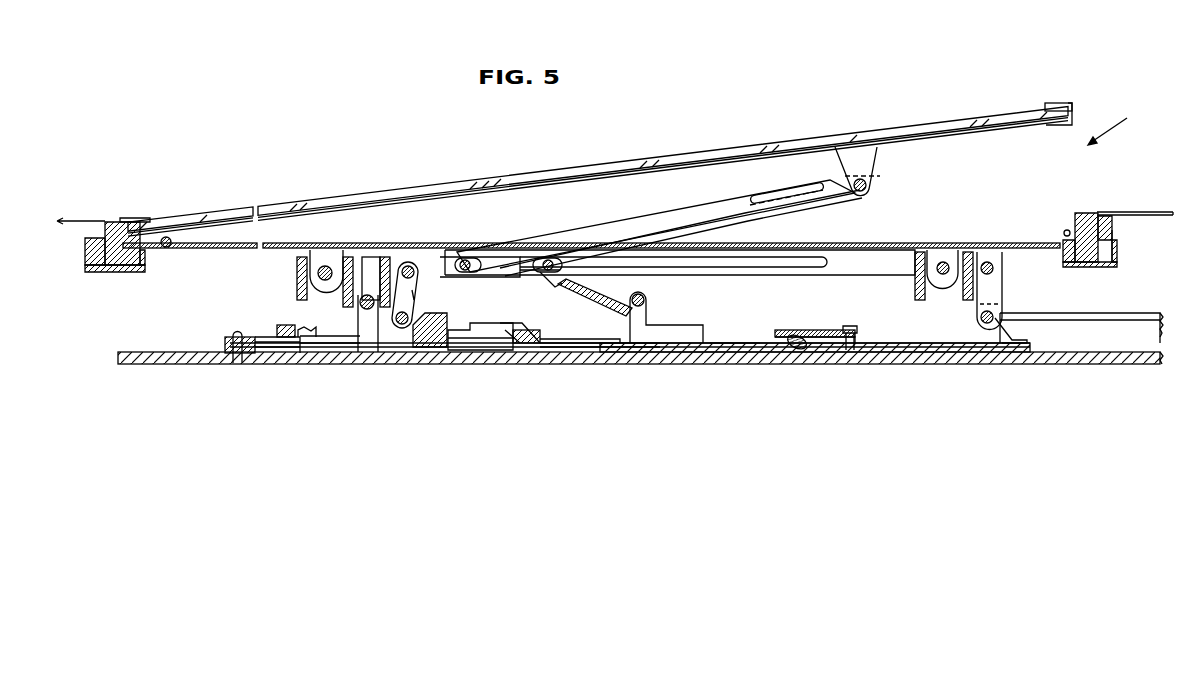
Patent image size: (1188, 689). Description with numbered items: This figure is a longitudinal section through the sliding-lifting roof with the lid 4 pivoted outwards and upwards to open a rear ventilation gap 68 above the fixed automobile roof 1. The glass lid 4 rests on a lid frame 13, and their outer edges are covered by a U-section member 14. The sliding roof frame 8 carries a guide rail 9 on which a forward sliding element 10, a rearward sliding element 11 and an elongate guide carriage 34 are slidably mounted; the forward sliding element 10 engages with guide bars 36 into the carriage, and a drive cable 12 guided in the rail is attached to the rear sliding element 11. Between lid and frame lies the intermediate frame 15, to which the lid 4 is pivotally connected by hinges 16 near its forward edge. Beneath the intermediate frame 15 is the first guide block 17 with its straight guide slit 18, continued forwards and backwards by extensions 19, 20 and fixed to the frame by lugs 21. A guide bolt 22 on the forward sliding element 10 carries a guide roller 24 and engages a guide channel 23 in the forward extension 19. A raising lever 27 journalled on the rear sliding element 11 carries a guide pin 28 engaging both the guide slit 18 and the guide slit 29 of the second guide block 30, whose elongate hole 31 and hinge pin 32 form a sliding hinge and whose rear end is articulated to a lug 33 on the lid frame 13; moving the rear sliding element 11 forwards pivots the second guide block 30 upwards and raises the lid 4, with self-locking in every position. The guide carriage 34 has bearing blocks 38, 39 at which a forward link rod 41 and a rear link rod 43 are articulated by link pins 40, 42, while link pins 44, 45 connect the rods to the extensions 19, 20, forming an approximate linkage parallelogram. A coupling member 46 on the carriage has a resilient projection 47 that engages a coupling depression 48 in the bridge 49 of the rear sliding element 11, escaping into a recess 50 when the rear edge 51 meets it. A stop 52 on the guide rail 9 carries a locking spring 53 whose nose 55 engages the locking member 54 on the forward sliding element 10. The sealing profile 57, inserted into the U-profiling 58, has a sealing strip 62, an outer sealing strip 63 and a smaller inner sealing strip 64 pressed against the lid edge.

The automobile roof 1 is at (1155, 211).
The lid 4 is at (698, 154).
The sliding roof frame 8 is at (1088, 365).
The guide rail 9 is at (170, 350).
The forward sliding element 10 is at (345, 333).
The rearward sliding element 11 is at (678, 328).
The drive cable 12 is at (530, 330).
The lid frame 13 is at (920, 128).
The U-section member 14 is at (1058, 104).
The intermediate frame 15 is at (1030, 243).
The hinge 16 is at (170, 248).
The first guide block 17 is at (860, 256).
The guide slit 18 is at (767, 270).
The forward extension 19 is at (297, 278).
The rear extension 20 is at (1003, 265).
The lug 21 is at (328, 258).
The guide bolt 22 is at (366, 348).
The guide channel 23 is at (384, 262).
The guide roller 24 is at (371, 262).
The raising lever 27 is at (586, 288).
The guide pin 28 is at (546, 258).
The guide slit 29 is at (704, 228).
The second guide block 30 is at (626, 232).
The elongate hole 31 is at (482, 270).
The hinge pin 32 is at (466, 272).
The lug 33 is at (876, 165).
The guide carriage 34 is at (742, 350).
The guide bar 36 is at (486, 352).
The forward bearing block 38 is at (432, 348).
The rear bearing block 39 is at (1002, 338).
The link pin 40 is at (400, 326).
The forward link rod 41 is at (414, 297).
The link pin 42 is at (985, 325).
The rear link rod 43 is at (990, 290).
The link pin 44 is at (411, 264).
The link pin 45 is at (985, 262).
The coupling member 46 is at (808, 330).
The projection 47 is at (846, 352).
The coupling depression 48 is at (604, 353).
The bridge 49 is at (568, 353).
The recess 50 is at (790, 350).
The rear edge 51 is at (644, 353).
The stop 52 is at (280, 325).
The locking spring 53 is at (262, 365).
The locking member 54 is at (306, 327).
The nose 55 is at (306, 356).
The sealing profile 57 is at (110, 218).
The U-profiling 58 is at (110, 272).
The sealing strip 62 is at (1103, 216).
The outer sealing strip 63 is at (1118, 236).
The inner sealing strip 64 is at (1065, 230).
The ventilation gap 68 is at (1115, 122).